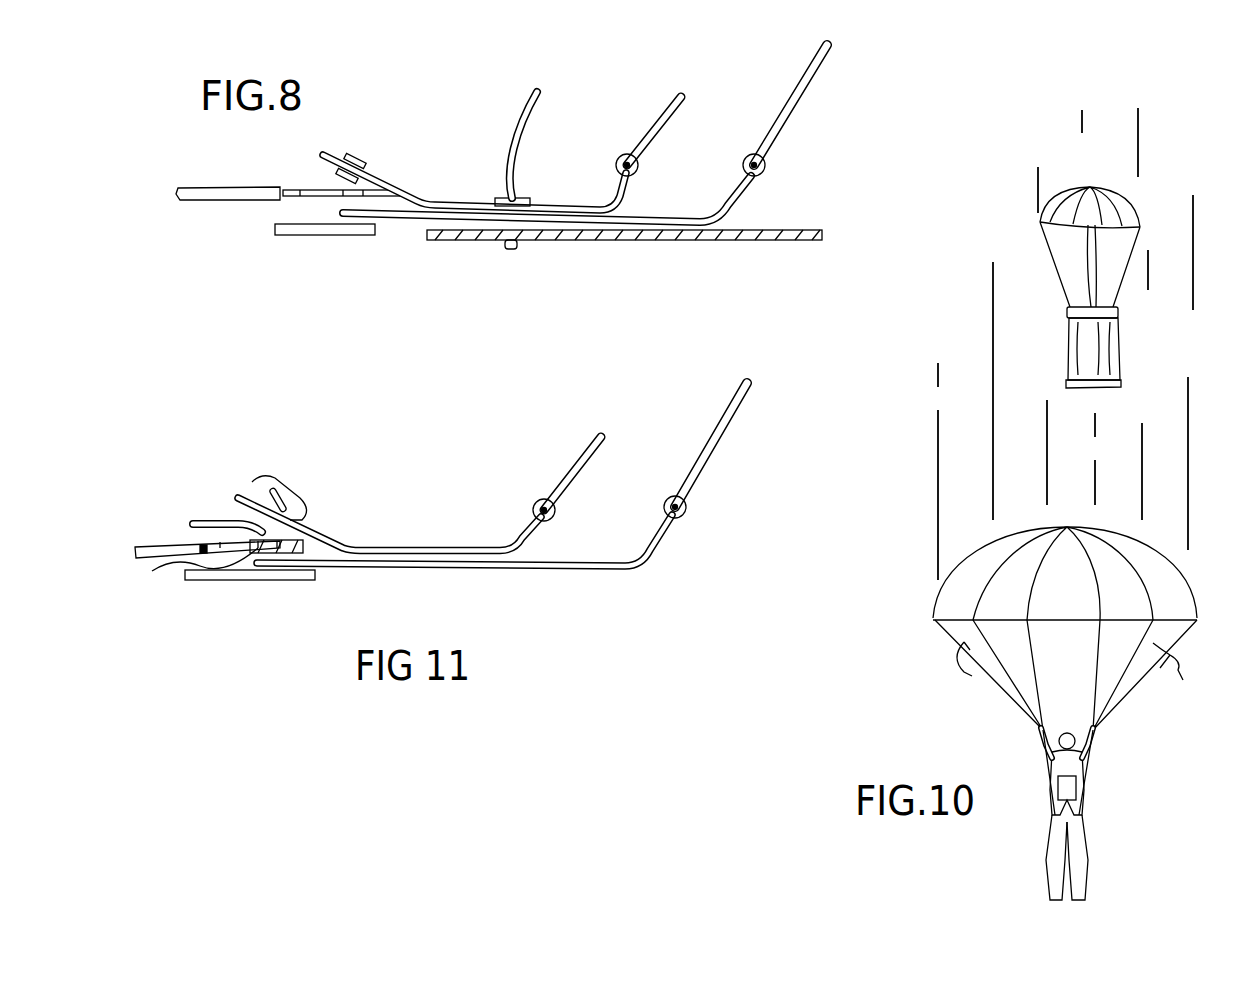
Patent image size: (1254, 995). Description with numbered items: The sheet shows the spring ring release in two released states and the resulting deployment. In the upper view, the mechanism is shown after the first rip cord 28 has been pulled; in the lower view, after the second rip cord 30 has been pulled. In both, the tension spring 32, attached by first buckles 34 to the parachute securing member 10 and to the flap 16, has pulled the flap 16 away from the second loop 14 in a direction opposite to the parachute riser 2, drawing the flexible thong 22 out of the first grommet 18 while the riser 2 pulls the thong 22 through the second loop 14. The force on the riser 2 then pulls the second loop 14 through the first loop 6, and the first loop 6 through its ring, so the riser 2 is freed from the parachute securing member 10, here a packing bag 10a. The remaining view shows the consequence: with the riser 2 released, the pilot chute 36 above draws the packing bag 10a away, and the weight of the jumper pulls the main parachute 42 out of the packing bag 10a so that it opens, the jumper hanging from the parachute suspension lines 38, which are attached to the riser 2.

In FIG. 10, the parachute riser 2 is at (1053, 757).
In FIG. 8, the first loop 6 is at (813, 78).
In FIG. 11, the first loop 6 is at (728, 413).
In FIG. 8, the parachute securing member 10 is at (323, 232).
In FIG. 11, the parachute securing member 10 is at (290, 583).
In FIG. 10, the packing bag 10a is at (1117, 338).
In FIG. 8, the second loop 14 is at (658, 130).
In FIG. 11, the second loop 14 is at (588, 458).
In FIG. 11, the flap 16 is at (242, 498).
In FIG. 8, the first grommet 18 is at (354, 160).
In FIG. 8, the flexible thong 22 is at (537, 128).
In FIG. 11, the flexible thong 22 is at (217, 520).
In FIG. 11, the first rip cord 28 is at (257, 492).
In FIG. 8, the second rip cord 30 is at (793, 230).
In FIG. 8, the tension spring 32 is at (243, 188).
In FIG. 11, the tension spring 32 is at (160, 543).
In FIG. 8, the first buckles 34 is at (312, 190).
In FIG. 11, the first buckles 34 is at (190, 568).
In FIG. 10, the pilot chute 36 is at (1112, 200).
In FIG. 10, the parachute suspension lines 38 is at (966, 672).
In FIG. 10, the main parachute 42 is at (995, 555).